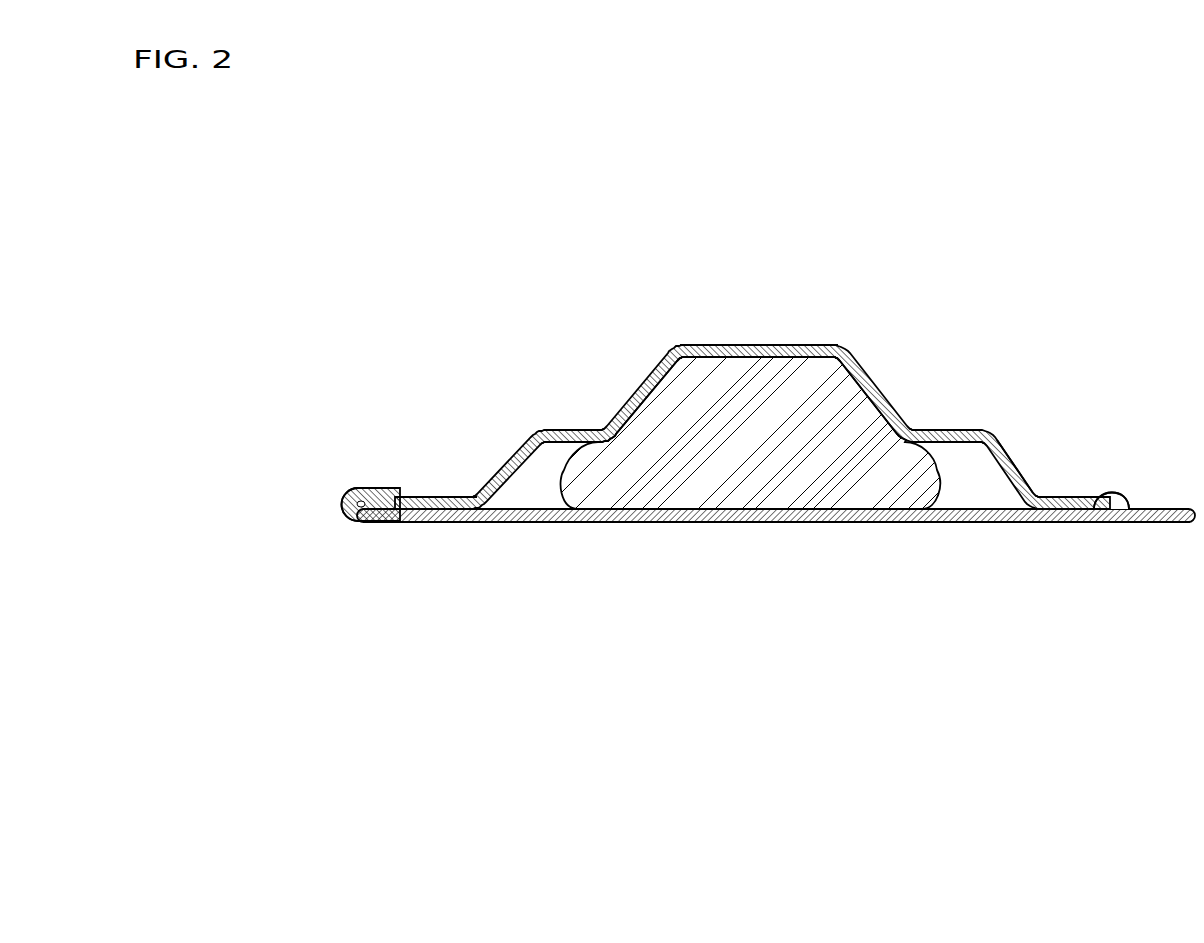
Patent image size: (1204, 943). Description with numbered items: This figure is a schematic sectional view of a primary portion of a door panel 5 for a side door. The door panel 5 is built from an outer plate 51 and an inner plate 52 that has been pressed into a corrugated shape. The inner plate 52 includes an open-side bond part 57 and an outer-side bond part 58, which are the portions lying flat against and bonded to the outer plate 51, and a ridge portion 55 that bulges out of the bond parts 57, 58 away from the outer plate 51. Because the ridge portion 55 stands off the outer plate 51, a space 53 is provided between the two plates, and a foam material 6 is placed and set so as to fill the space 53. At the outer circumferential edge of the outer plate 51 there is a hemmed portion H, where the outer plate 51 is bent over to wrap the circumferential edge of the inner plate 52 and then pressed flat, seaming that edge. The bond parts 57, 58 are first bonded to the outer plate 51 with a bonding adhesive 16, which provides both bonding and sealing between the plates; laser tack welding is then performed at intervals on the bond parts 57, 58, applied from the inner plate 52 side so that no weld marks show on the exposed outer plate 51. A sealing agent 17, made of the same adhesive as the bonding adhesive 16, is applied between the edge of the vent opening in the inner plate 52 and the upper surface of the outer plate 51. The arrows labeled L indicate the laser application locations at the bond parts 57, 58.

The door panel 5 is at (762, 351).
The foam material 6 is at (703, 425).
The bonding adhesive 16 is at (425, 523).
The sealing agent 17 is at (1123, 495).
The outer plate 51 is at (717, 523).
The inner plate 52 is at (930, 430).
The space 53 is at (965, 475).
The ridge portion 55 is at (843, 347).
The open-side bond part 57 is at (1083, 497).
The outer-side bond part 58 is at (473, 497).
The hemmed portion H is at (373, 487).
The load L is at (452, 480).